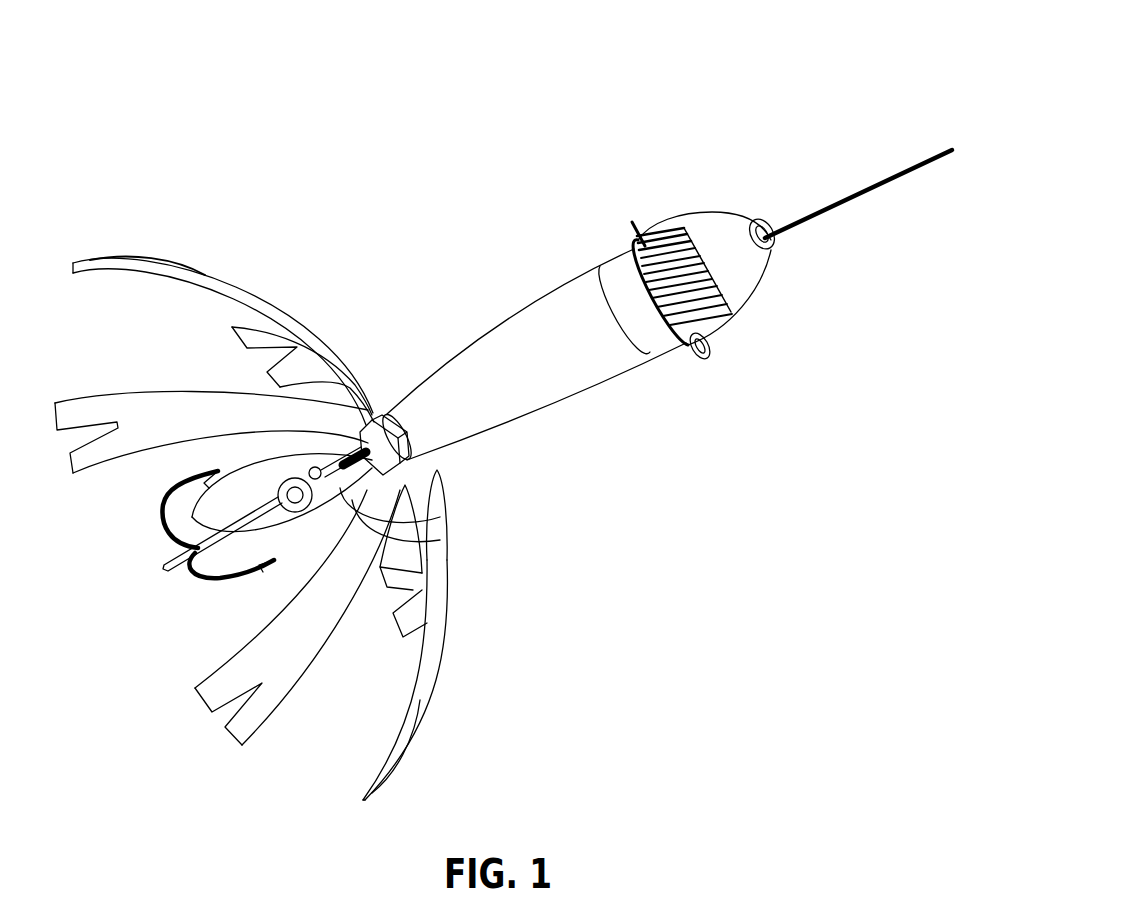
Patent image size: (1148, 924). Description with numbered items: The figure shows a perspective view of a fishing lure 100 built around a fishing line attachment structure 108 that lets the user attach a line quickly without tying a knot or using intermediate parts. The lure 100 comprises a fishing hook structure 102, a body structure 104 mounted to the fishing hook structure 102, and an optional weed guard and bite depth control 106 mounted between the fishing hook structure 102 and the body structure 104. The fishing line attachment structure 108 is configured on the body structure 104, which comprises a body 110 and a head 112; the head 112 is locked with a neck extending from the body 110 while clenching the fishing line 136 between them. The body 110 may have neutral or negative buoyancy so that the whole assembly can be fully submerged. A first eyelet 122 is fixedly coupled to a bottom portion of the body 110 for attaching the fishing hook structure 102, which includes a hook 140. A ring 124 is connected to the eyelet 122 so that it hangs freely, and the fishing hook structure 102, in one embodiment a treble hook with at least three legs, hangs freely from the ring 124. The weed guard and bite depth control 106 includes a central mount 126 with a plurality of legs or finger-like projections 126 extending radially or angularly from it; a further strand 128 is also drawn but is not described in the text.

The fishing lure 100 is at (881, 47).
The fishing hook structure 102 is at (135, 538).
The body structure 104 is at (563, 208).
The weed guard and bite depth control 106 is at (128, 236).
The fishing line attachment structure 108 is at (738, 340).
The body 110 is at (560, 395).
The head 112 is at (732, 227).
The first eyelet 122 is at (440, 517).
The ring 124 is at (440, 540).
The central mount and finger-like projections 126 is at (296, 356).
The skirt strand 128 is at (437, 657).
The fishing line 136 is at (878, 180).
The hook 140 is at (207, 578).